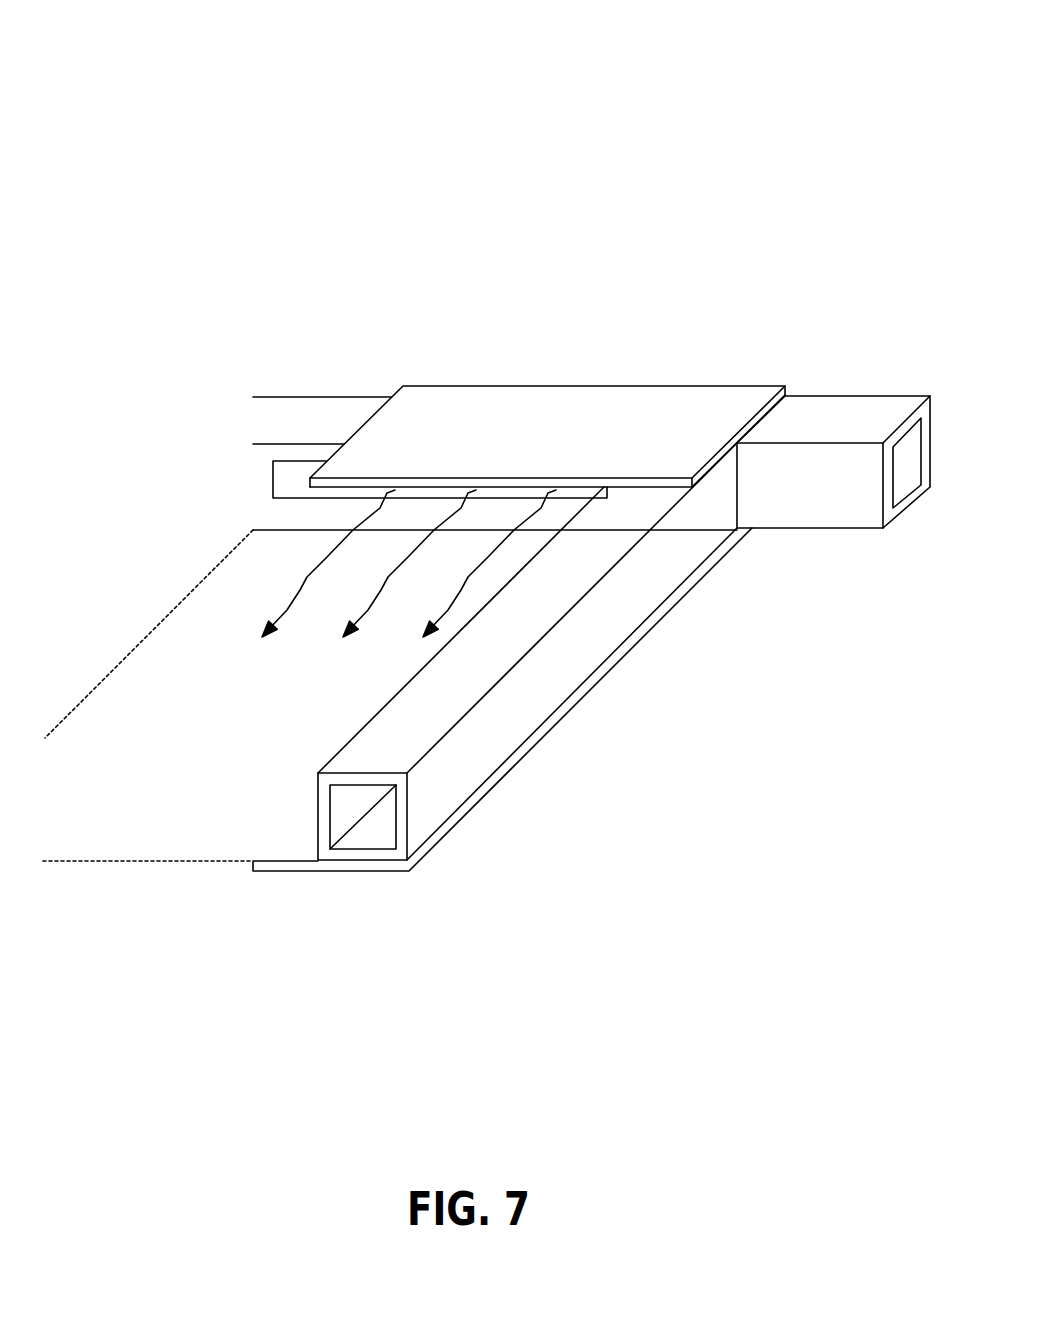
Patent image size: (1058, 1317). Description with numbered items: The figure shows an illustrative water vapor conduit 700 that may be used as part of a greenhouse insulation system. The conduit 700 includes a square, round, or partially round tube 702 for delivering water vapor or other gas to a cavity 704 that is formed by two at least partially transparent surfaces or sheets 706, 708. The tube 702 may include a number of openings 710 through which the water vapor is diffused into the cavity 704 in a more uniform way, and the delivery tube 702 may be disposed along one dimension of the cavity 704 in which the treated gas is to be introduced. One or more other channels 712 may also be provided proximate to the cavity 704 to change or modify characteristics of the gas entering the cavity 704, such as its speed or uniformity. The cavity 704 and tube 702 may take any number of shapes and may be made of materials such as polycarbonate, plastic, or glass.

The water vapor conduit 700 is at (864, 59).
The tube 702 is at (884, 528).
The cavity 704 is at (390, 629).
The at least partially transparent sheet 706 is at (598, 386).
The at least partially transparent sheet 708 is at (382, 872).
The openings 710 is at (273, 482).
The channel 712 is at (534, 712).